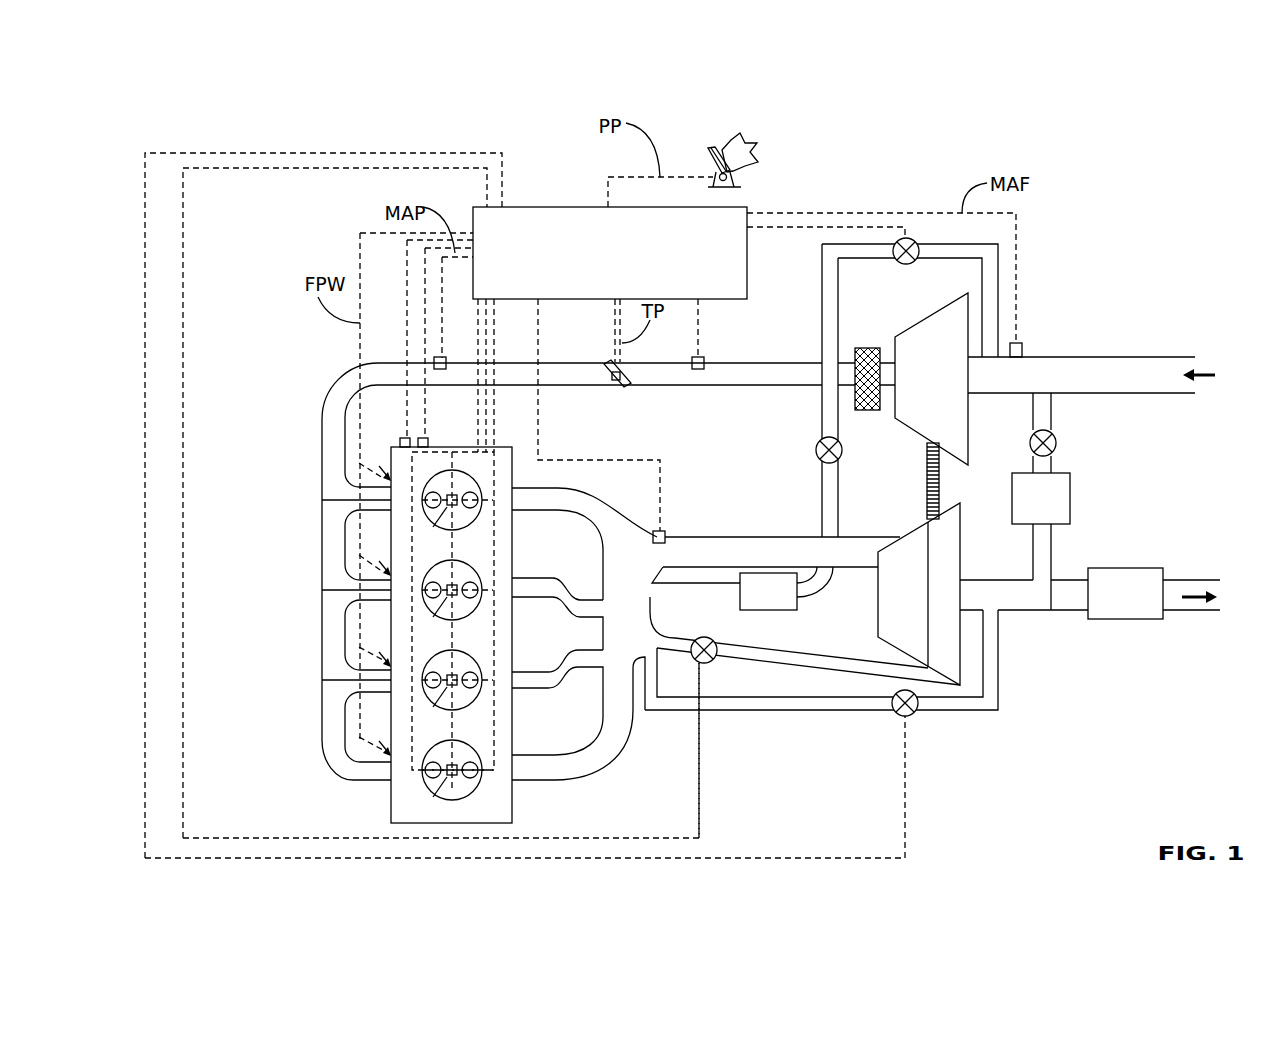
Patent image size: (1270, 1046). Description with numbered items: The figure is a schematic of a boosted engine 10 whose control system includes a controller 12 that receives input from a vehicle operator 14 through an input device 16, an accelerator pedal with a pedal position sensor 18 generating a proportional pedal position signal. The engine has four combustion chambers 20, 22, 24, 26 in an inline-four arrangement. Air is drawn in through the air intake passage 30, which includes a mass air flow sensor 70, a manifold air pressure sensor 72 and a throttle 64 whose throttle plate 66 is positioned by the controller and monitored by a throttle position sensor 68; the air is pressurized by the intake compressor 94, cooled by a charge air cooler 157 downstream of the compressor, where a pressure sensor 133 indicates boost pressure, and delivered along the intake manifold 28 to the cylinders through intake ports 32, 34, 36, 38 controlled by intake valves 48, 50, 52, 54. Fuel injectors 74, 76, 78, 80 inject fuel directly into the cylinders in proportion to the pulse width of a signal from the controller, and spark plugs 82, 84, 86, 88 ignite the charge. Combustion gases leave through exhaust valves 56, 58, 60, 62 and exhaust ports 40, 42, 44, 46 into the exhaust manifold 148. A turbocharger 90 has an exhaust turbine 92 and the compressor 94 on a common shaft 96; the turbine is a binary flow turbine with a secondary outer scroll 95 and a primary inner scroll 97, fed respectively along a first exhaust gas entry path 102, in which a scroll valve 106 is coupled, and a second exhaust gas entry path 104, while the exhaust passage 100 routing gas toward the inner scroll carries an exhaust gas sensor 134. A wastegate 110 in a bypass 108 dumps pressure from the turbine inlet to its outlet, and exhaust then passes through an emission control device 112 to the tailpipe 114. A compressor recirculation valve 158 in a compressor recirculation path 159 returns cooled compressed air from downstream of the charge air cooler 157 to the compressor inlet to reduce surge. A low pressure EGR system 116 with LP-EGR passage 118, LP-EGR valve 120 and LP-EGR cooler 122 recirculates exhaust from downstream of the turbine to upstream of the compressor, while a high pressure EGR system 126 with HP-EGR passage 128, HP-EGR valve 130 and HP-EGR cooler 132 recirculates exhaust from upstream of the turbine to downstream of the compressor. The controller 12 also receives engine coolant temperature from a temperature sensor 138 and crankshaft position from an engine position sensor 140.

The engine 10 is at (238, 400).
The controller 12 is at (598, 280).
The vehicle operator 14 is at (757, 145).
The input device 16 is at (708, 165).
The pedal position sensor 18 is at (745, 175).
The combustion chamber 20 is at (459, 509).
The combustion chamber 22 is at (459, 600).
The combustion chamber 24 is at (459, 690).
The combustion chamber 26 is at (459, 778).
The intake manifold 28 is at (321, 400).
The air intake passage 30 is at (1108, 375).
The intake port 32 is at (321, 500).
The intake port 34 is at (321, 590).
The intake port 36 is at (321, 680).
The intake port 38 is at (356, 779).
The exhaust port 40 is at (514, 502).
The exhaust port 42 is at (516, 578).
The exhaust port 44 is at (515, 681).
The exhaust port 46 is at (513, 758).
The intake valve 48 is at (433, 491).
The intake valve 50 is at (433, 581).
The intake valve 52 is at (433, 671).
The intake valve 54 is at (433, 761).
The exhaust valve 56 is at (470, 491).
The exhaust valve 58 is at (470, 581).
The exhaust valve 60 is at (470, 671).
The exhaust valve 62 is at (470, 761).
The throttle 64 is at (609, 377).
The throttle plate 66 is at (623, 381).
The throttle position sensor 68 is at (625, 365).
The mass air flow sensor 70 is at (1022, 347).
The manifold air pressure sensor 72 is at (445, 357).
The fuel injector 74 is at (385, 473).
The fuel injector 76 is at (385, 568).
The fuel injector 78 is at (385, 659).
The fuel injector 80 is at (385, 746).
The spark plug 82 is at (431, 527).
The spark plug 84 is at (431, 617).
The spark plug 86 is at (431, 707).
The spark plug 88 is at (431, 797).
The turbocharger 90 is at (968, 484).
The exhaust turbine 92 is at (962, 568).
The intake compressor 94 is at (931, 379).
The secondary outer scroll 95 is at (933, 609).
The common shaft 96 is at (926, 464).
The primary inner scroll 97 is at (891, 609).
The exhaust passage 100 is at (720, 537).
The first exhaust gas entry path 102 is at (758, 645).
The second exhaust gas entry path 104 is at (743, 563).
The scroll valve 106 is at (701, 662).
The bypass 108 is at (844, 712).
The wastegate 110 is at (915, 716).
The emission control device 112 is at (1125, 593).
The tailpipe 114 is at (1209, 595).
The low pressure EGR system 116 is at (1093, 510).
The LP-EGR passage 118 is at (1050, 563).
The LP-EGR valve 120 is at (1056, 445).
The LP-EGR cooler 122 is at (1041, 498).
The high pressure EGR system 126 is at (771, 504).
The HP-EGR passage 128 is at (820, 527).
The HP-EGR valve 130 is at (815, 450).
The HP-EGR cooler 132 is at (751, 602).
The pressure sensor 133 is at (703, 356).
The exhaust gas sensor 134 is at (656, 531).
The temperature sensor 138 is at (424, 437).
The engine position sensor 140 is at (403, 437).
The exhaust manifold 148 is at (608, 637).
The charge air cooler 157 is at (877, 410).
The compressor recirculation valve 158 is at (904, 264).
The compressor recirculation path 159 is at (821, 318).